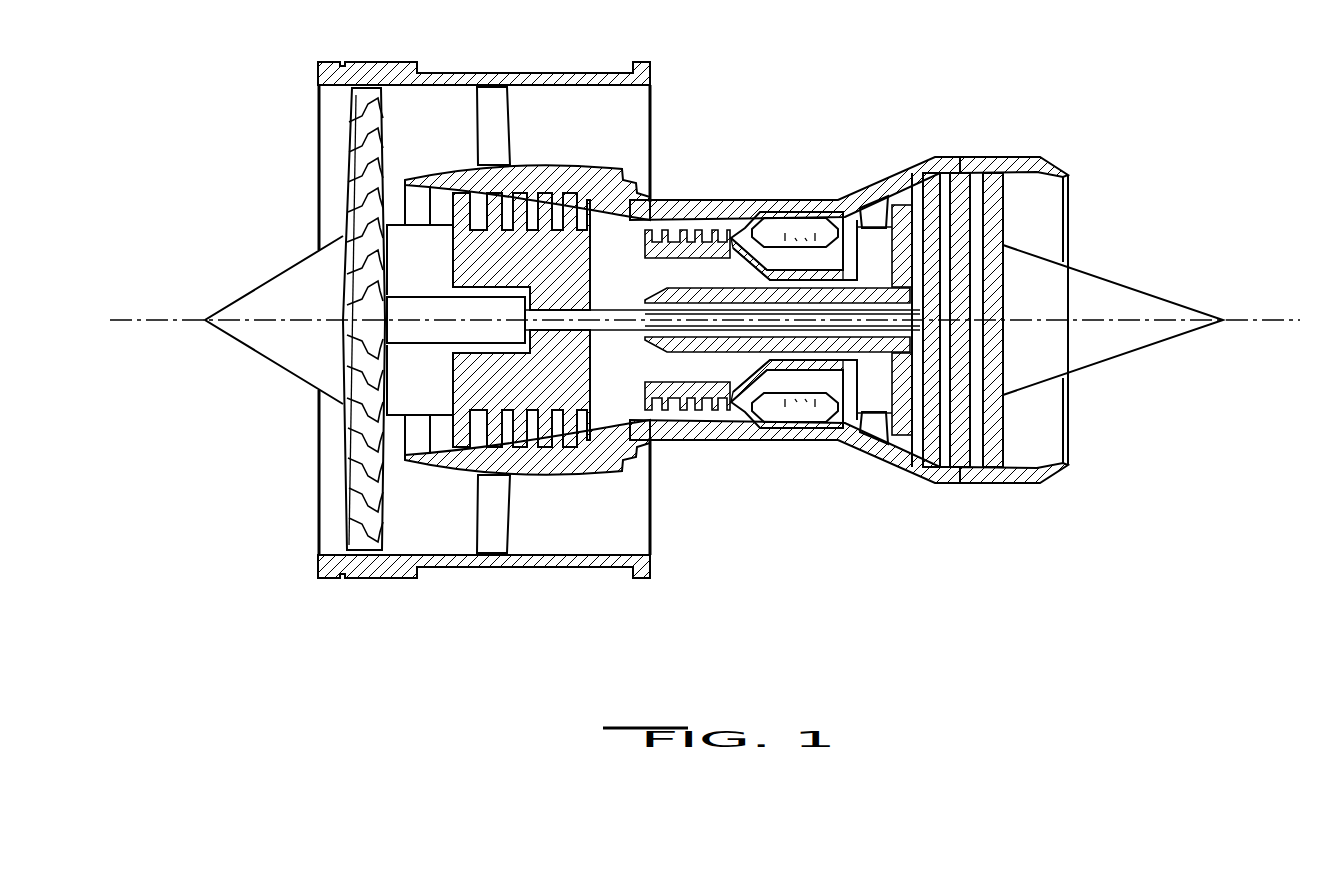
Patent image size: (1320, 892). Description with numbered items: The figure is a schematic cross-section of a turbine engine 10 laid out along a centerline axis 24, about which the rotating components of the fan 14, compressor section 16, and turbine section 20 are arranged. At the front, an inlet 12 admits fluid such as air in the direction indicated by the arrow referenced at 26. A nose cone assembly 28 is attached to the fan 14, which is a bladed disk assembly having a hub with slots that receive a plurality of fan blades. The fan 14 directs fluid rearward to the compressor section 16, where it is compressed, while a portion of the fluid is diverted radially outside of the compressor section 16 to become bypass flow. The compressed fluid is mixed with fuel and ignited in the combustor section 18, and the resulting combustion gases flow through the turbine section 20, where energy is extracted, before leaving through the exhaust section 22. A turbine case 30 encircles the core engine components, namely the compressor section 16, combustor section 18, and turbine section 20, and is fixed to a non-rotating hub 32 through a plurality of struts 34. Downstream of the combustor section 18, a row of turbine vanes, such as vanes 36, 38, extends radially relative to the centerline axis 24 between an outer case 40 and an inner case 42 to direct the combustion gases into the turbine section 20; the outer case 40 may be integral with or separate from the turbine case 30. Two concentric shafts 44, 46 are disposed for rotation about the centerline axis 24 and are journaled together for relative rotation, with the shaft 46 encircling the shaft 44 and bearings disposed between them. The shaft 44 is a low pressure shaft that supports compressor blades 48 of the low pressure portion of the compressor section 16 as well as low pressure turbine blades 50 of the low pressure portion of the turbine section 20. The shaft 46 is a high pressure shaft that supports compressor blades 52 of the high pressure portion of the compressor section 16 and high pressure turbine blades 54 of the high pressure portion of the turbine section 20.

The turbine engine 10 is at (758, 145).
The inlet 12 is at (316, 544).
The fan 14 is at (352, 130).
The compressor section 16 is at (580, 458).
The combustor section 18 is at (793, 418).
The turbine section 20 is at (952, 488).
The exhaust section 22 is at (1069, 430).
The centerline axis 24 is at (140, 319).
The arrow indicating fluid flow 26 is at (230, 200).
The nose cone assembly 28 is at (247, 368).
The turbine case 30 is at (460, 178).
The non-rotating hub 32 is at (431, 262).
The struts 34 is at (416, 193).
The turbine vane 36 is at (873, 210).
The turbine vane 38 is at (878, 434).
The outer case 40 is at (862, 194).
The inner case 42 is at (878, 394).
The low pressure shaft 44 is at (622, 442).
The high pressure shaft 46 is at (753, 392).
The compressor blades 48 is at (512, 456).
The low pressure turbine blades 50 is at (903, 177).
The compressor blades 52 is at (690, 214).
The high pressure turbine blades 54 is at (848, 436).